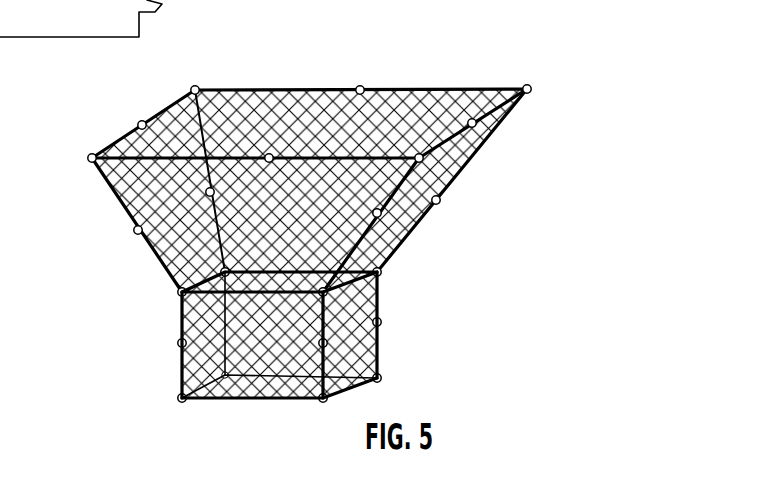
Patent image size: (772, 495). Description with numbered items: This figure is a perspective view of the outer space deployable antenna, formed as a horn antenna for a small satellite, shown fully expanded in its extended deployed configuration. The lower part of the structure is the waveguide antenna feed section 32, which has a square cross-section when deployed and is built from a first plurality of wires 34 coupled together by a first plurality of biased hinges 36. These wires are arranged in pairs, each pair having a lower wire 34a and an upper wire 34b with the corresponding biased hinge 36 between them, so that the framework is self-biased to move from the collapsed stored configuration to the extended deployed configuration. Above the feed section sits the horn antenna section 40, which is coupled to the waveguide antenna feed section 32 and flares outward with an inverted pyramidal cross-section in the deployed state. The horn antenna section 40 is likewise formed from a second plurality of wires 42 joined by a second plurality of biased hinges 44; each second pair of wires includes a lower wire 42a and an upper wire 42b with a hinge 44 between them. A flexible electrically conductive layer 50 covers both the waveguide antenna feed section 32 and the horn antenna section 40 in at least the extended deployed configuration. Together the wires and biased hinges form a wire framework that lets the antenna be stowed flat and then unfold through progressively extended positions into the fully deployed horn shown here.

The waveguide antenna feed section 32 is at (300, 360).
The first plurality of wires 34 is at (300, 335).
The lower wire 34a is at (183, 370).
The upper wire 34b is at (181, 313).
The first plurality of biased hinges 36 is at (380, 322).
The horn antenna section 40 is at (302, 230).
The second plurality of wires 42 is at (302, 188).
The lower wire 42a is at (400, 247).
The upper wire 42b is at (505, 124).
The second plurality of biased hinges 44 is at (380, 215).
The flexible electrically conductive layer 50 is at (298, 106).